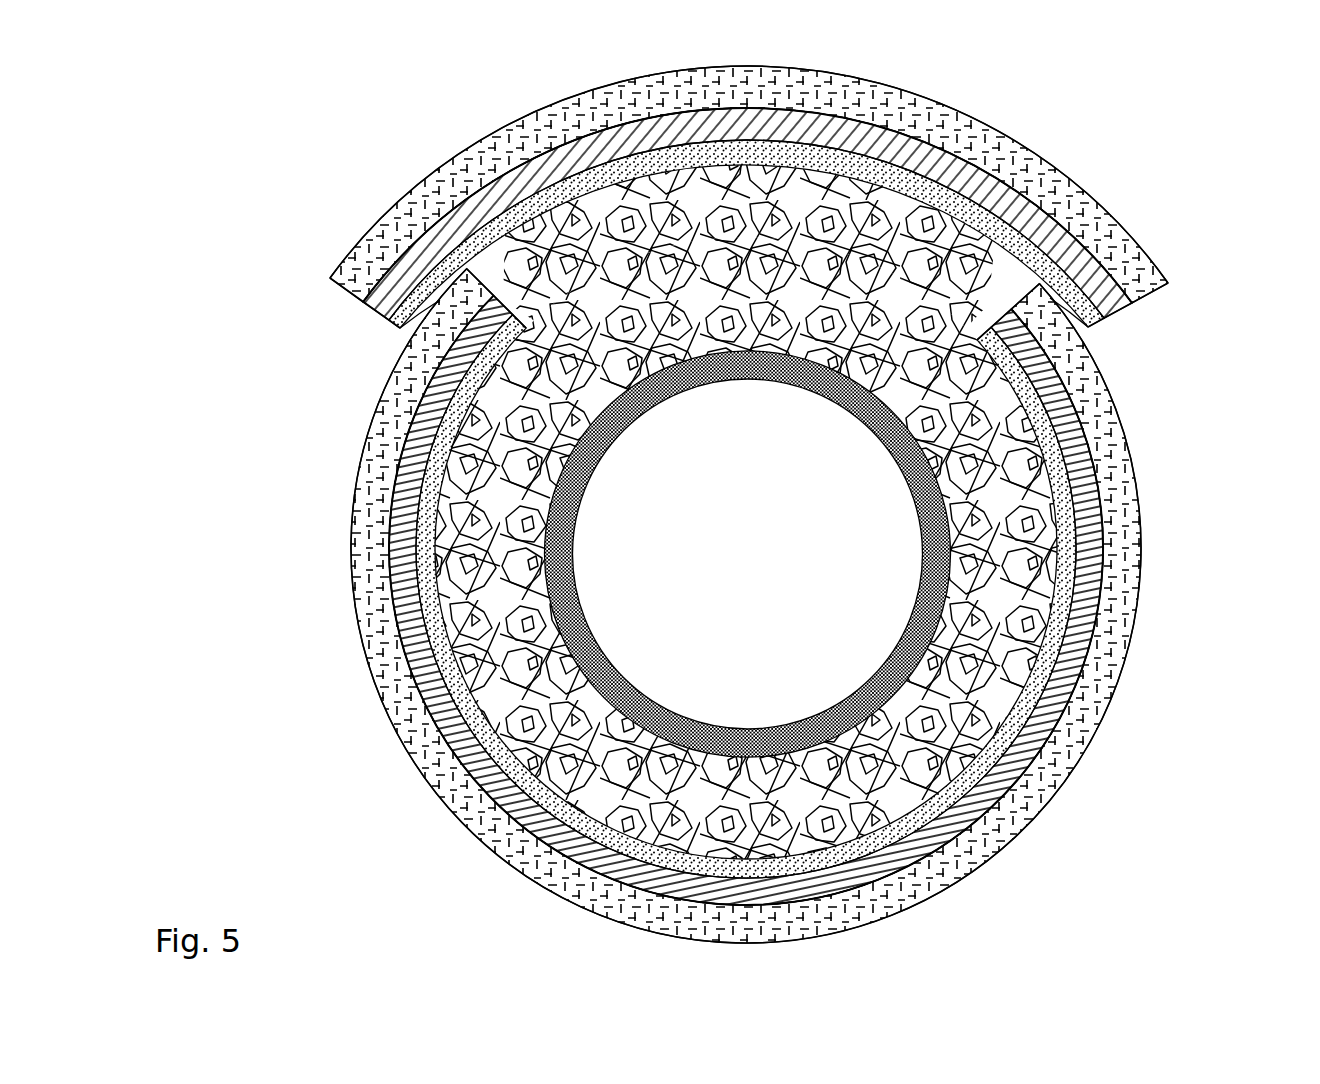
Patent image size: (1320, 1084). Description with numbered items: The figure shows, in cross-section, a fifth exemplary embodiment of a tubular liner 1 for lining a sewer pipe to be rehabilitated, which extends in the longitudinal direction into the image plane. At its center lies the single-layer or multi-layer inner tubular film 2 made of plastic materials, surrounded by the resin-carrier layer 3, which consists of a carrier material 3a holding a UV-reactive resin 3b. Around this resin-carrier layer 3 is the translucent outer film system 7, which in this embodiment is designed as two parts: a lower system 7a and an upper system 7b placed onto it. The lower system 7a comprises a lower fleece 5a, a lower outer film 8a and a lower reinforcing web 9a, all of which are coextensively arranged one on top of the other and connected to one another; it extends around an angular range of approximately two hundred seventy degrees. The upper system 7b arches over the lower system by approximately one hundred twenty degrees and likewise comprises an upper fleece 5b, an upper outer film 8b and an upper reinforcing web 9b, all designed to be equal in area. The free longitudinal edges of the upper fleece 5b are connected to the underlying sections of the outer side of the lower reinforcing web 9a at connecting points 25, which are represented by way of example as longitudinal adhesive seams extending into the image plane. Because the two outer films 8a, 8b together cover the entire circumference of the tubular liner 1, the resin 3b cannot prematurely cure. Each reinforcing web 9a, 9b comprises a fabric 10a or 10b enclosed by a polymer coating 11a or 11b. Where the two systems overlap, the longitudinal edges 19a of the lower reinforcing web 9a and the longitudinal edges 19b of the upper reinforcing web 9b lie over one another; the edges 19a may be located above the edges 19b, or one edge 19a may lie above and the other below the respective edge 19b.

The tubular liner 1 is at (245, 338).
The inner tubular film 2 is at (678, 714).
The resin-carrier layer 3 is at (1045, 530).
The carrier material 3a is at (578, 350).
The UV-reactive resin 3b is at (595, 462).
The lower fleece 5a is at (413, 683).
The upper fleece 5b is at (997, 217).
The translucent outer film system 7 is at (300, 477).
The lower system 7a is at (343, 656).
The upper system 7b is at (1088, 167).
The lower outer film 8a is at (1063, 665).
The upper outer film 8b is at (580, 115).
The lower reinforcing web 9a is at (1040, 822).
The upper reinforcing web 9b is at (445, 157).
The fabric 10a is at (450, 793).
The fabric 10b is at (955, 150).
The polymer coating 11a is at (500, 838).
The polymer coating 11b is at (838, 80).
The longitudinal edges 19a is at (367, 250).
The longitudinal edges 19b is at (390, 213).
The connecting points 25 is at (418, 323).